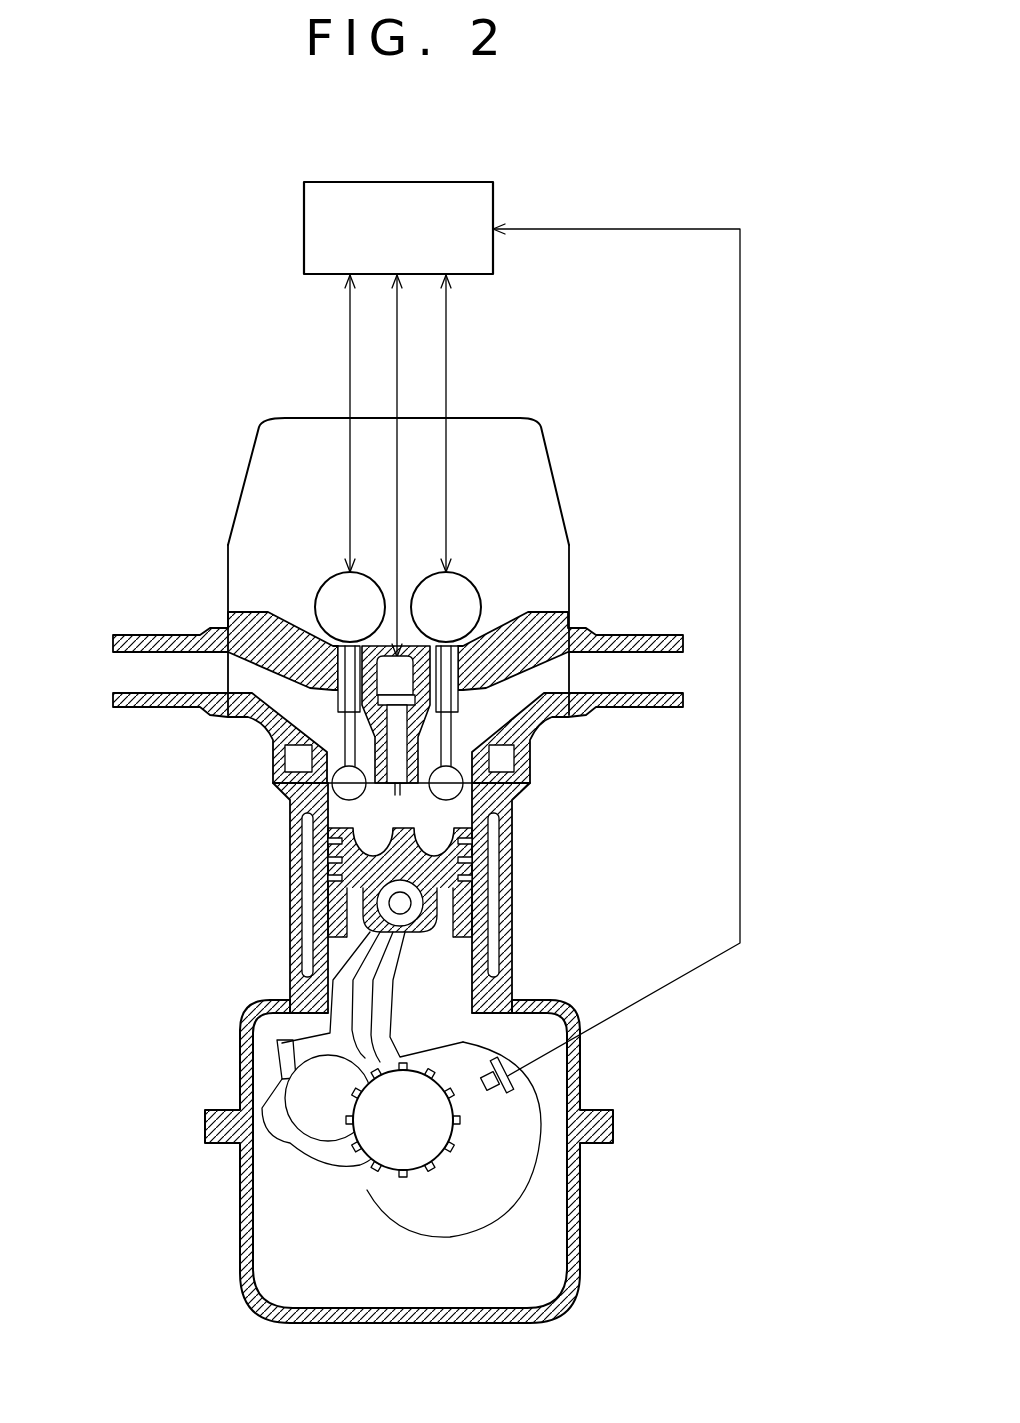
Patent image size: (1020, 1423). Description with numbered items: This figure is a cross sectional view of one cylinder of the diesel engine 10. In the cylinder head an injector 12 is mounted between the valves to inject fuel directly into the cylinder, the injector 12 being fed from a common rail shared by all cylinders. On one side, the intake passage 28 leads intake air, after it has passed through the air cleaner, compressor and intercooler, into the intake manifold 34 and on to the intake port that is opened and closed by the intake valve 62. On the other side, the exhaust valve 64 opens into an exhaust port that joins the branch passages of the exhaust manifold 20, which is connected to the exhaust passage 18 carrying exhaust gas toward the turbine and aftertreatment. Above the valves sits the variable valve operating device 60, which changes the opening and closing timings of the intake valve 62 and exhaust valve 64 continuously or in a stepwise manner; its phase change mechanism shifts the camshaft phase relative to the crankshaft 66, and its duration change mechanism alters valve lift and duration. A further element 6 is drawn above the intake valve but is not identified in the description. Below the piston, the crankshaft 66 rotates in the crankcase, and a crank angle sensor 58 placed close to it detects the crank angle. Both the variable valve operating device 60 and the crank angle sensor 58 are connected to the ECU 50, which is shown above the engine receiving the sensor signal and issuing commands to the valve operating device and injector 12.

The ECU 50 is at (450, 182).
The intake variable valve mechanism 6 is at (335, 590).
The variable valve operating device 60 is at (461, 590).
The intake passage 28 is at (204, 671).
The intake manifold 34 is at (160, 665).
The exhaust passage 18 is at (577, 671).
The exhaust manifold 20 is at (615, 665).
The diesel engine 10 is at (279, 989).
The intake valve 62 is at (345, 780).
The exhaust valve 64 is at (452, 780).
The injector 12 is at (397, 778).
The crankshaft 66 is at (405, 1156).
The crank angle sensor 58 is at (490, 1092).